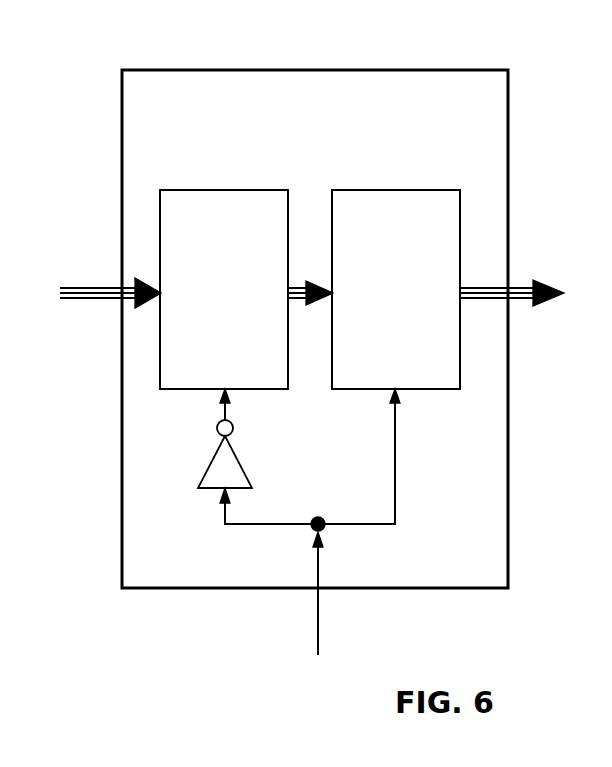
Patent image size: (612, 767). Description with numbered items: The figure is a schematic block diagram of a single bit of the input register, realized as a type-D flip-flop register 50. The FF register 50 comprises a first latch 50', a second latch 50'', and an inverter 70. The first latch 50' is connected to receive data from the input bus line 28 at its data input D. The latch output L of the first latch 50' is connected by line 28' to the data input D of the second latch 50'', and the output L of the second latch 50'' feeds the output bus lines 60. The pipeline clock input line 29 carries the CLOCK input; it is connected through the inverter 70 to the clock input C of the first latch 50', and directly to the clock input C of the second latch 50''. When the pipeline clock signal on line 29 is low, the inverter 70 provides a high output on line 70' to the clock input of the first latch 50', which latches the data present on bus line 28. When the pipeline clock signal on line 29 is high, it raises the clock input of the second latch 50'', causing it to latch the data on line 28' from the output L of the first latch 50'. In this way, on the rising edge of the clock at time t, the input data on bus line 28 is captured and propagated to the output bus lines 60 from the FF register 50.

The FF register 50 is at (315, 298).
The first latch 50' is at (224, 257).
The second latch 50'' is at (396, 257).
The input bus line 28 is at (107, 264).
The line 28' is at (310, 370).
The output bus lines 60 is at (530, 287).
The inverter 70 is at (290, 475).
The line 70' is at (197, 417).
The pipeline clock input line 29 is at (316, 630).